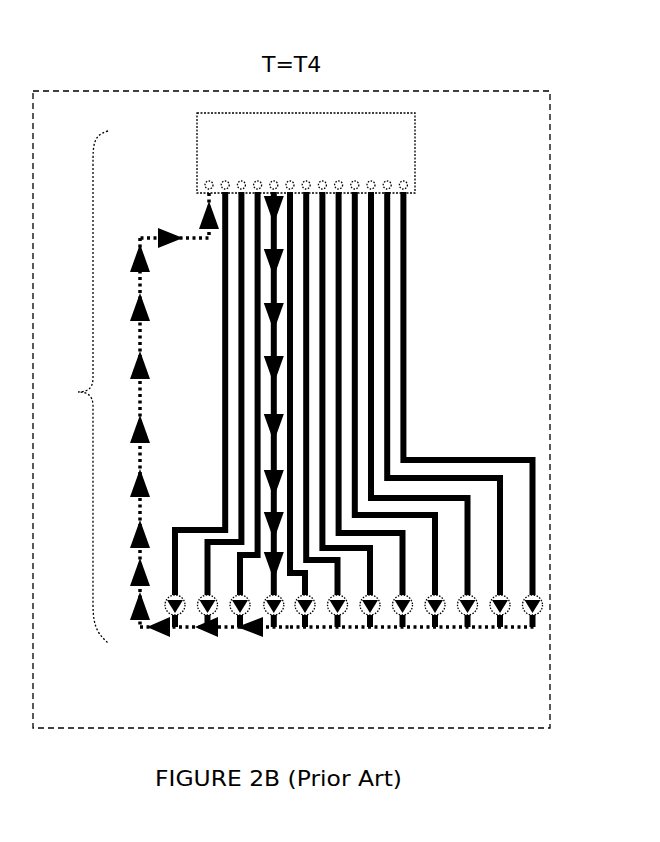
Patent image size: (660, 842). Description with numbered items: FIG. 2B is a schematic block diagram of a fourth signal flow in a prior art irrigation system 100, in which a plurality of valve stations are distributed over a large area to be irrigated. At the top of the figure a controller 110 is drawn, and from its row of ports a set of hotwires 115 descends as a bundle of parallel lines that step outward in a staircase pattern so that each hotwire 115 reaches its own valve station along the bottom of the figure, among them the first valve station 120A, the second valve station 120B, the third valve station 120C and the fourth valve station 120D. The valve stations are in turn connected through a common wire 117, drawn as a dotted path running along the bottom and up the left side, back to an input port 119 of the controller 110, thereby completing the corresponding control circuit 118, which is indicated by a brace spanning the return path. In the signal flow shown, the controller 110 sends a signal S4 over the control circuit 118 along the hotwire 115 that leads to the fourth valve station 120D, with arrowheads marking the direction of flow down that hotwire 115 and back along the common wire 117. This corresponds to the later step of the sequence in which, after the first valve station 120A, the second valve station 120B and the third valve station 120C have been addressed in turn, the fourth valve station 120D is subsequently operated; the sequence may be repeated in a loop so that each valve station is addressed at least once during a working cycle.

The irrigation system 100 is at (233, 90).
The controller 110 is at (197, 150).
The input port 119 is at (197, 176).
The hotwires 115 is at (226, 315).
The fourth control signal S4 is at (275, 392).
The common wire 117 is at (160, 232).
The control circuit 118 is at (94, 387).
The first valve station 120A is at (158, 635).
The second valve station 120B is at (205, 637).
The third valve station 120C is at (248, 637).
The fourth valve station 120D is at (283, 632).